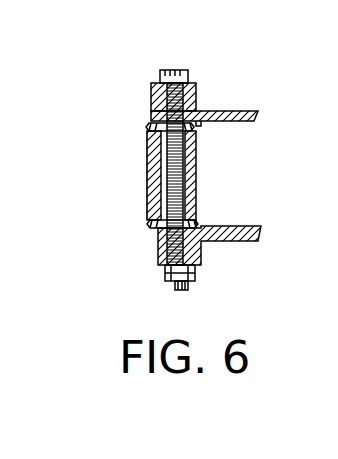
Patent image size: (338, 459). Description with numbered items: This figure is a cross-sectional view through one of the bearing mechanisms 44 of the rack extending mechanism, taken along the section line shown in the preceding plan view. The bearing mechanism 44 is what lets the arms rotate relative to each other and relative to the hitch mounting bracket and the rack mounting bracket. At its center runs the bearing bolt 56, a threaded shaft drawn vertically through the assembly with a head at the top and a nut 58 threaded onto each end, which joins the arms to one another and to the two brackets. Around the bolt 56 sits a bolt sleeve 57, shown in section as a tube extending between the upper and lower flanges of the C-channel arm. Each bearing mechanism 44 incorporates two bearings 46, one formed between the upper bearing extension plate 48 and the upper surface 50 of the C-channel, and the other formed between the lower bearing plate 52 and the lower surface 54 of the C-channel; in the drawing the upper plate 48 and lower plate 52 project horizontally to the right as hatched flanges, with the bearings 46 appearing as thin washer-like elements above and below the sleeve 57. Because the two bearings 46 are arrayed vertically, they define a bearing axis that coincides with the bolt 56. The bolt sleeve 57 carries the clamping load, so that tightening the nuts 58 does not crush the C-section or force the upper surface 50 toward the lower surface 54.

The bearing mechanism 44 is at (253, 166).
The bearing 46 is at (145, 115).
The upper bearing extension plate 48 is at (240, 113).
The upper surface of the C-channel 50 is at (215, 115).
The lower bearing plate 52 is at (234, 214).
The lower surface of the C-channel 54 is at (198, 213).
The bearing bolt 56 is at (176, 281).
The bolt sleeve 57 is at (188, 170).
The nut 58 is at (143, 90).